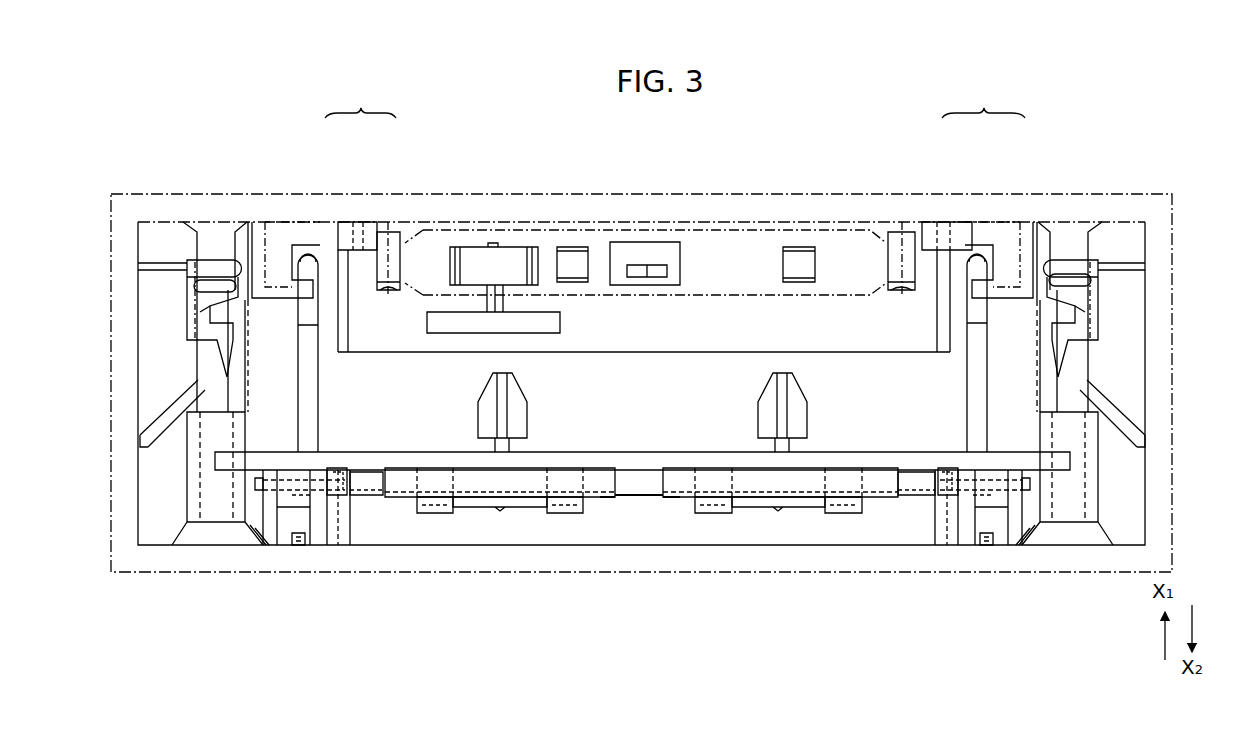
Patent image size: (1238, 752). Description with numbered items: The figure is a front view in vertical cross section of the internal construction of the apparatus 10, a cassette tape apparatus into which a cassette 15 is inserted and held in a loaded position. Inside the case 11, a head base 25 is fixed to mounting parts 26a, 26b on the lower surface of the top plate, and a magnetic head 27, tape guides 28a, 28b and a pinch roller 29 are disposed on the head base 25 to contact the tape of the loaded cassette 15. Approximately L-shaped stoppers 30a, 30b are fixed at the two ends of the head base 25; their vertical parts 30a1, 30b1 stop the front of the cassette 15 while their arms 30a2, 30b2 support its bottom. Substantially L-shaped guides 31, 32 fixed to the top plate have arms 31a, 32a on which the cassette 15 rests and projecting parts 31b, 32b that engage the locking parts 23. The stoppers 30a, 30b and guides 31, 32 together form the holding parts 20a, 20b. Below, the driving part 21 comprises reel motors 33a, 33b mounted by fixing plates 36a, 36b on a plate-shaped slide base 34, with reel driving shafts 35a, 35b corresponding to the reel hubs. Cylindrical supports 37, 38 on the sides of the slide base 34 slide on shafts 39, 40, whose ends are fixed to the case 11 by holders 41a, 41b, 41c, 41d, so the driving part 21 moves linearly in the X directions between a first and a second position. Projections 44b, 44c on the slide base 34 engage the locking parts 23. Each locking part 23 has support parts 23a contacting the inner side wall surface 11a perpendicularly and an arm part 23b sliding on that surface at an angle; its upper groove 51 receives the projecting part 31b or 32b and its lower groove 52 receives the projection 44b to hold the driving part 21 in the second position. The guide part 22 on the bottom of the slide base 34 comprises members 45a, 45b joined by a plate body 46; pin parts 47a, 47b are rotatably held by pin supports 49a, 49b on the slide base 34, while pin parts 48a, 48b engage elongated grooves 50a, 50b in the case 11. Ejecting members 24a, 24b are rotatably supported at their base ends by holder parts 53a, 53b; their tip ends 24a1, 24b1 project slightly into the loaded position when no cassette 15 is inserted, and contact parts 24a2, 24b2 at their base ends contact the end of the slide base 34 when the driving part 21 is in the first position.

The apparatus 10 is at (161, 133).
The case 11 is at (1173, 290).
The inner side wall surface 11a is at (140, 334).
The cassette 15 is at (752, 296).
The holding part 20a is at (983, 104).
The holding part 20b is at (360, 104).
The driving part 21 is at (636, 450).
The guide part 22 is at (646, 498).
The locking part 23 is at (213, 305).
The support part 23a is at (163, 262).
The arm part 23b is at (175, 405).
The ejecting member 24a is at (963, 381).
The tip end 24a1 is at (977, 255).
The contact part 24a2 is at (1000, 500).
The ejecting member 24b is at (322, 382).
The tip end 24b1 is at (308, 255).
The contact part 24b2 is at (290, 497).
The head base 25 is at (652, 350).
The mounting part 26a is at (945, 240).
The mounting part 26b is at (355, 240).
The magnetic head 27 is at (665, 247).
The tape guide 28a is at (805, 247).
The tape guide 28b is at (593, 247).
The pinch roller 29 is at (522, 245).
The stopper 30a is at (905, 245).
The vertical part 30a1 is at (887, 263).
The arm 30a2 is at (903, 292).
The stopper 30b is at (390, 245).
The vertical part 30b1 is at (401, 263).
The arm 30b2 is at (389, 292).
The guide 31 is at (1030, 235).
The arm 31a is at (1030, 260).
The projecting part 31b is at (1070, 262).
The guide 32 is at (262, 235).
The arm 32a is at (258, 262).
The projecting part 32b is at (225, 260).
The reel motor 33a is at (883, 498).
The reel motor 33b is at (608, 498).
The slide base 34 is at (845, 452).
The reel driving shaft 35a is at (795, 382).
The reel driving shaft 35b is at (515, 382).
The fixing plate 36a is at (779, 508).
The fixing plate 36b is at (509, 508).
The support 37 is at (1098, 430).
The support 38 is at (245, 422).
The shaft 39 is at (1040, 373).
The shaft 40 is at (246, 386).
The holder 41a is at (1080, 215).
The holder 41b is at (1090, 540).
The holder 41c is at (233, 215).
The holder 41d is at (190, 540).
The projection 44b is at (1068, 462).
The projection 44c is at (215, 462).
The member 45a is at (957, 527).
The member 45b is at (320, 535).
The plate body 46 is at (377, 496).
The pin part 47a is at (950, 470).
The pin part 47b is at (335, 470).
The pin part 48a is at (970, 535).
The pin part 48b is at (318, 540).
The pin support 49a is at (995, 470).
The pin support 49b is at (345, 500).
The groove 50a is at (988, 547).
The groove 50b is at (295, 547).
The upper groove 51 is at (200, 288).
The lower groove 52 is at (220, 315).
The holder part 53a is at (1070, 535).
The holder part 53b is at (348, 535).